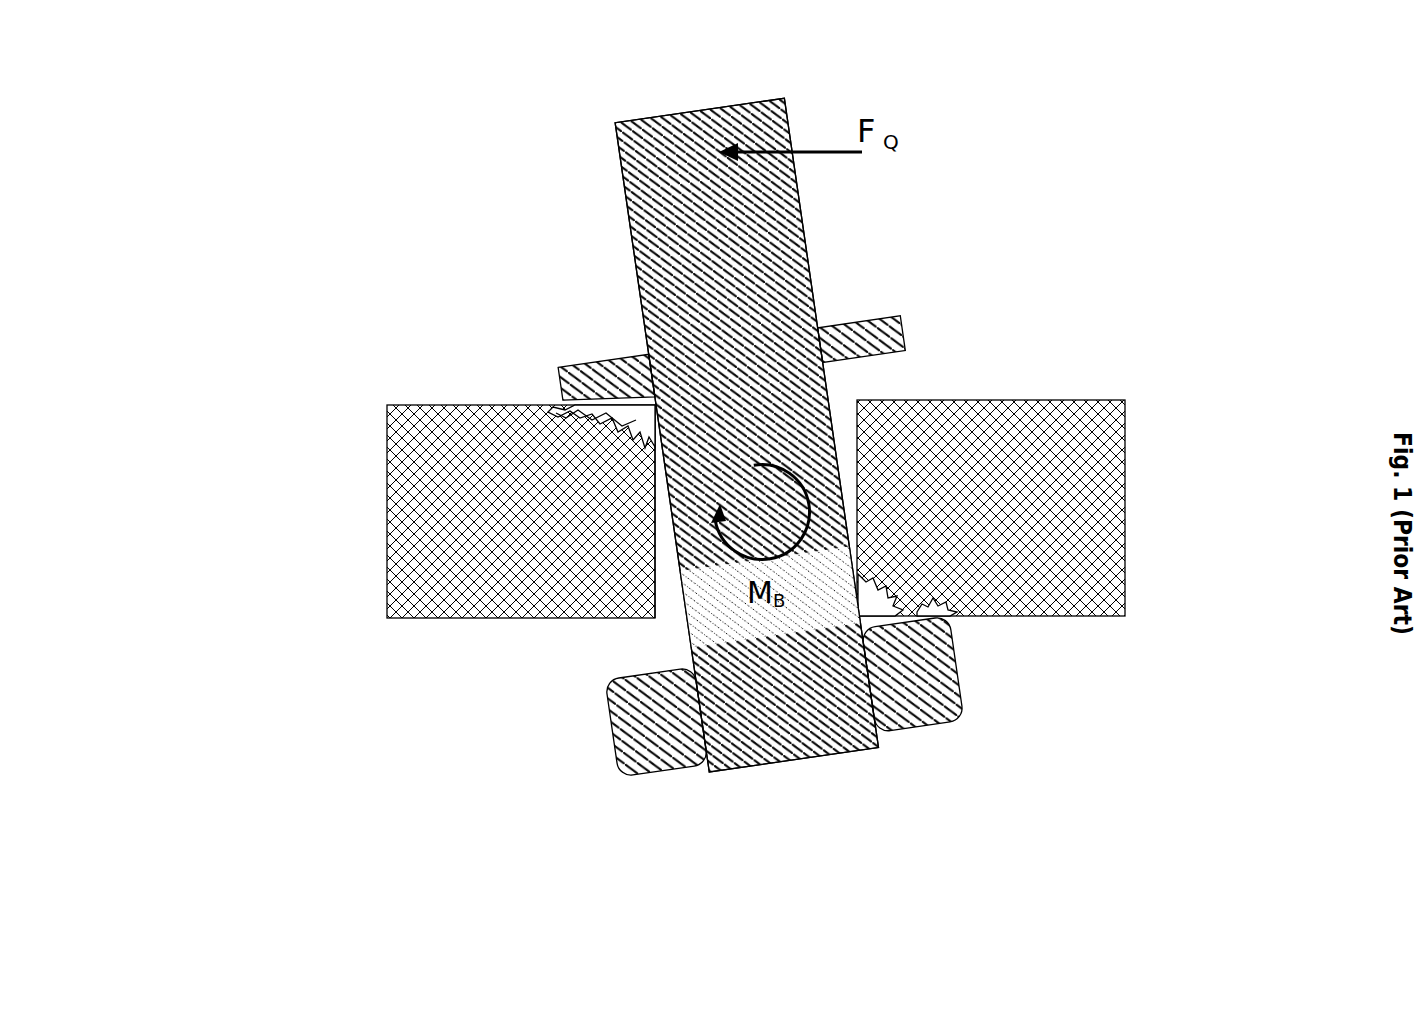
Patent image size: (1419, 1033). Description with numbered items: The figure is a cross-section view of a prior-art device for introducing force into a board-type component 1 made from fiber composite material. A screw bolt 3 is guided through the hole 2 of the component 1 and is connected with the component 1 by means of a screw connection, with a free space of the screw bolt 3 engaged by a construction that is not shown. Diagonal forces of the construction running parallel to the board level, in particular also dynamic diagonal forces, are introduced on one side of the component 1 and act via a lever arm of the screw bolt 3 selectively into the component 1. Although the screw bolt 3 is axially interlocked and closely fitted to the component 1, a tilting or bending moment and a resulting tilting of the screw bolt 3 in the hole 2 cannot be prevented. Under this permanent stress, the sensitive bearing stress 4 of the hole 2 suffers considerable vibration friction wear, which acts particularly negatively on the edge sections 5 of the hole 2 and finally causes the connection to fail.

The board-type component 1 is at (470, 500).
The hole 2 is at (663, 597).
The screw bolt 3 is at (710, 262).
The bearing stress 4 is at (640, 541).
The edge sections 5 is at (637, 422).